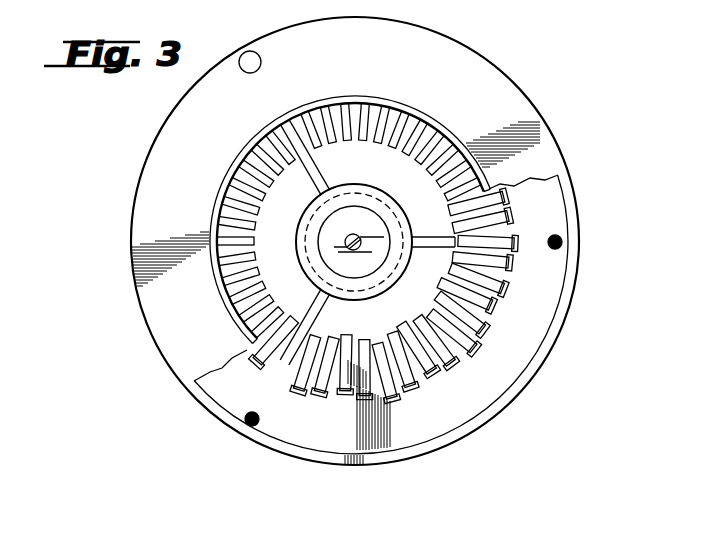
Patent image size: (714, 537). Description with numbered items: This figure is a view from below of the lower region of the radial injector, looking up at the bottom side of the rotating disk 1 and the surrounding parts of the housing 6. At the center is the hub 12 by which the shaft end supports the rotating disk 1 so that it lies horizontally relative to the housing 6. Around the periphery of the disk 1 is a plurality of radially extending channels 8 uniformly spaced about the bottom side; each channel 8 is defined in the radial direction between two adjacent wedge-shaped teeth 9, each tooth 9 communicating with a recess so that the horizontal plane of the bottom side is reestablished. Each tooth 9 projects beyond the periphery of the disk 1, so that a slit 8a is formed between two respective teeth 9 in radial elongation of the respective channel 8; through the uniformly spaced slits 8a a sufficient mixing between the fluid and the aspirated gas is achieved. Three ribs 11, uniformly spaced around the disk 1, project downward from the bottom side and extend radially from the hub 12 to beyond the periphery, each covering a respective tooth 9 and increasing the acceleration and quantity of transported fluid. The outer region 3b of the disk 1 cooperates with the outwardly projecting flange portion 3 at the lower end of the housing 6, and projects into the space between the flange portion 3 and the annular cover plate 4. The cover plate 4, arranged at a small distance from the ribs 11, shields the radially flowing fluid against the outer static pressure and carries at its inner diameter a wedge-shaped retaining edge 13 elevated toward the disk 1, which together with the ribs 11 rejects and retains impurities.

The rotating disk 1 is at (397, 178).
The flange portion 3 is at (487, 390).
The outer region 3b is at (480, 333).
The cover plate 4 is at (163, 152).
The housing 6 is at (499, 66).
The channels 8 is at (445, 148).
The slits 8a is at (460, 356).
The wedge-shaped tooth 9 is at (506, 200).
The ribs 11 is at (318, 176).
The hub 12 is at (297, 240).
The retaining edge 13 is at (386, 118).